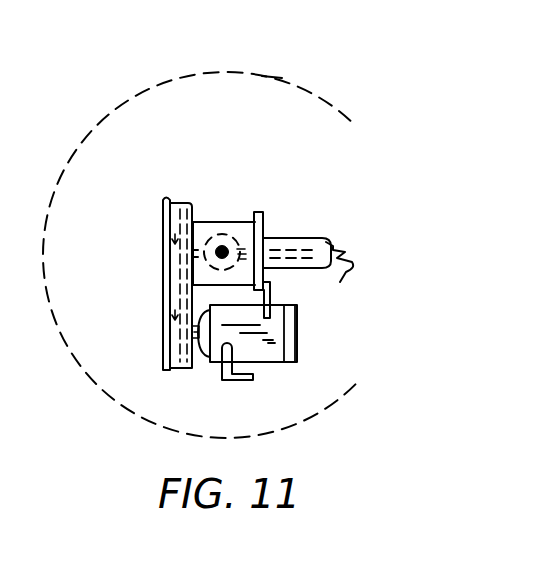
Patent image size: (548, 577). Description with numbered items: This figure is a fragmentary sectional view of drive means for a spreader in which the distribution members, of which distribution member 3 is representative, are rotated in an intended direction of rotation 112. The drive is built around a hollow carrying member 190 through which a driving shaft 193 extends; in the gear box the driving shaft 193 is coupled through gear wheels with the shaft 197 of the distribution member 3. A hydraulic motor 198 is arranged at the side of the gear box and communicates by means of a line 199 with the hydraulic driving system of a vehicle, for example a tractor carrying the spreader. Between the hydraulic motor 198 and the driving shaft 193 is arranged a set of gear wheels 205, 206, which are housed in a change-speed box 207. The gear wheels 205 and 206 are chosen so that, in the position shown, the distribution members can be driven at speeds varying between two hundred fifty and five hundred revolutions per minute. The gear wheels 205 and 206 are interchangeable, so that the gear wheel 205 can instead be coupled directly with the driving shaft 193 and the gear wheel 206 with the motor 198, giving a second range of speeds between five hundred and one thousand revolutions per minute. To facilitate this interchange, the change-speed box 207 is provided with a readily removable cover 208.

The distribution member 3 is at (279, 79).
The intended direction of rotation 112 is at (205, 50).
The hollow carrying member 190 is at (310, 237).
The driving shaft 193 is at (343, 278).
The shaft of the distribution member 197 is at (223, 250).
The hydraulic motor 198 is at (279, 360).
The line 199 is at (230, 381).
The gear wheel 205 is at (163, 318).
The gear wheel 206 is at (163, 244).
The change-speed box 207 is at (190, 197).
The removable cover 208 is at (162, 203).